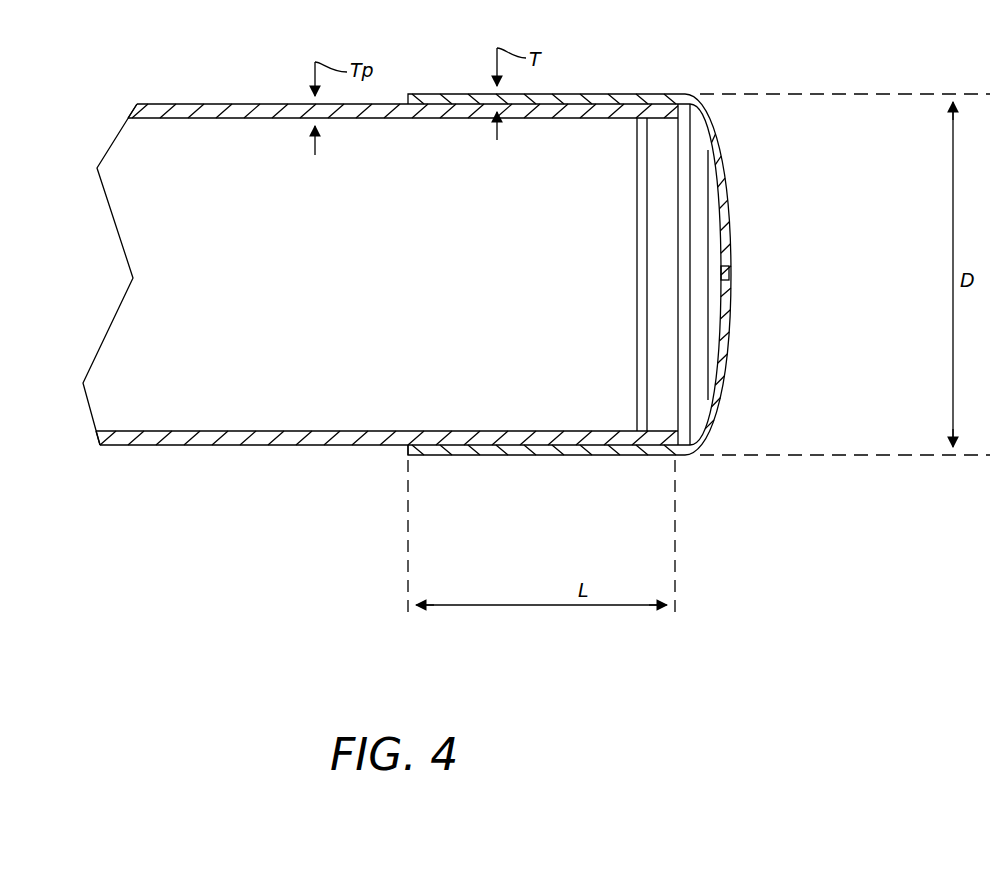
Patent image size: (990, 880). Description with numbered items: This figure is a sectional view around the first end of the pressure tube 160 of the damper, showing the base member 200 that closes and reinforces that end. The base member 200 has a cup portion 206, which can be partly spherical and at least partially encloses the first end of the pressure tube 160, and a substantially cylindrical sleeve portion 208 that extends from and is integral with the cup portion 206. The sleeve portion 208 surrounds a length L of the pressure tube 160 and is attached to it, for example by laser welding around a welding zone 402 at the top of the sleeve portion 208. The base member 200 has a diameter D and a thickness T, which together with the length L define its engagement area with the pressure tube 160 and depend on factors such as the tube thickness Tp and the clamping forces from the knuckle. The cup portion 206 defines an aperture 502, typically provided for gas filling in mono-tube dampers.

The pressure tube 160 is at (195, 447).
The base member 200 is at (653, 298).
The cup portion 206 is at (728, 202).
The sleeve portion 208 is at (508, 457).
The welding zone 402 is at (406, 448).
The aperture 502 is at (729, 273).